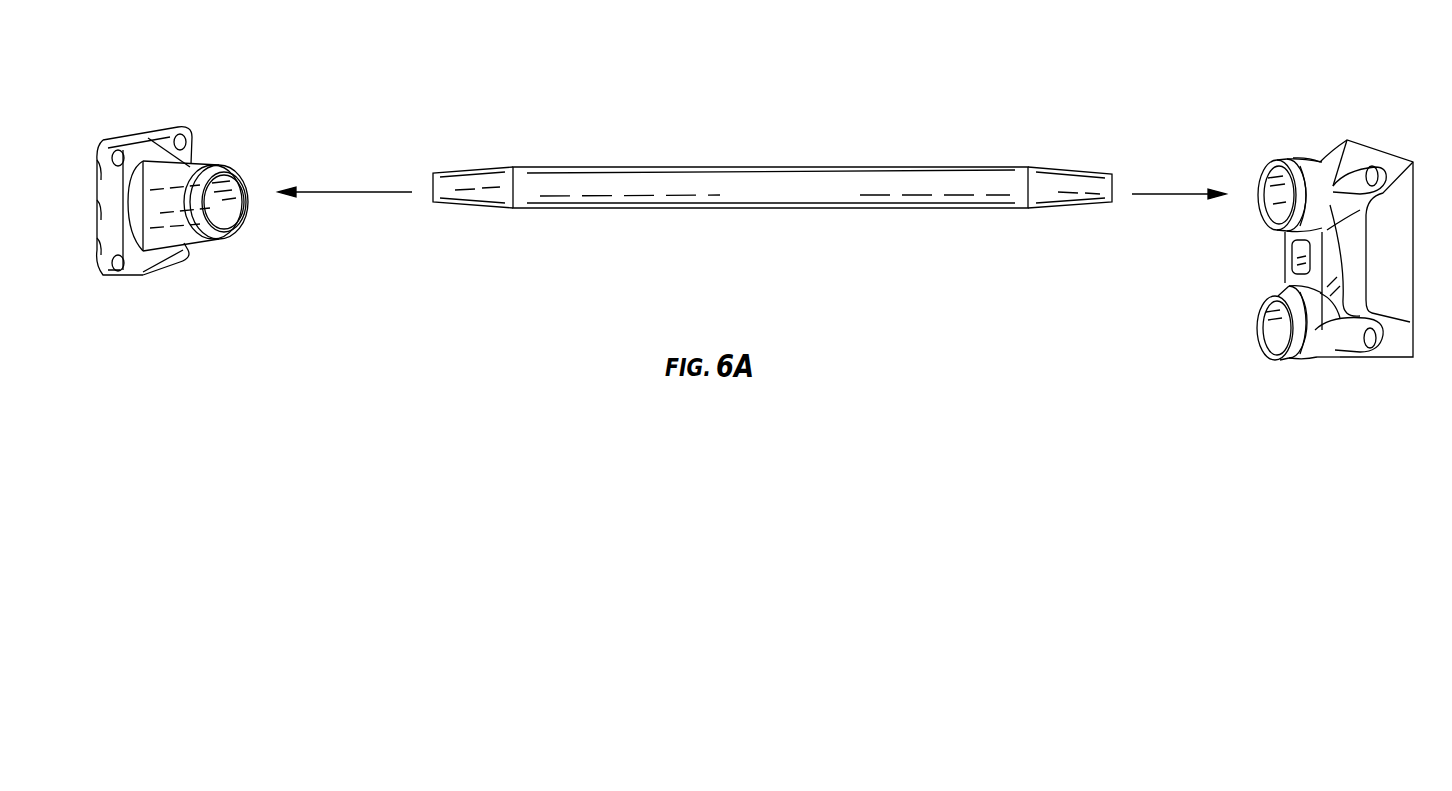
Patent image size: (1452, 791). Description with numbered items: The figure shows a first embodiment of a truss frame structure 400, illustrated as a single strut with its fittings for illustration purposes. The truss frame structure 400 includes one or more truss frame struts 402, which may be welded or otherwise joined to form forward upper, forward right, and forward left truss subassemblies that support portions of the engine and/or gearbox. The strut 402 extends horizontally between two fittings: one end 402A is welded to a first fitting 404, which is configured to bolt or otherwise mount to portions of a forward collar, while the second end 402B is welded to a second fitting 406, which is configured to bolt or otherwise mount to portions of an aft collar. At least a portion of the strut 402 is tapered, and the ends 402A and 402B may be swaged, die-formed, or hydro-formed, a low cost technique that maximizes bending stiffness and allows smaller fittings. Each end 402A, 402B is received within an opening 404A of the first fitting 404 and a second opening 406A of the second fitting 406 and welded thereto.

The truss frame structure 400 is at (347, 110).
The truss frame strut 402 is at (760, 190).
The end 402A is at (453, 188).
The end 402B is at (1052, 188).
The first fitting 404 is at (1340, 350).
The opening 404A is at (1270, 200).
The second fitting 406 is at (128, 267).
The second opening 406A is at (227, 208).